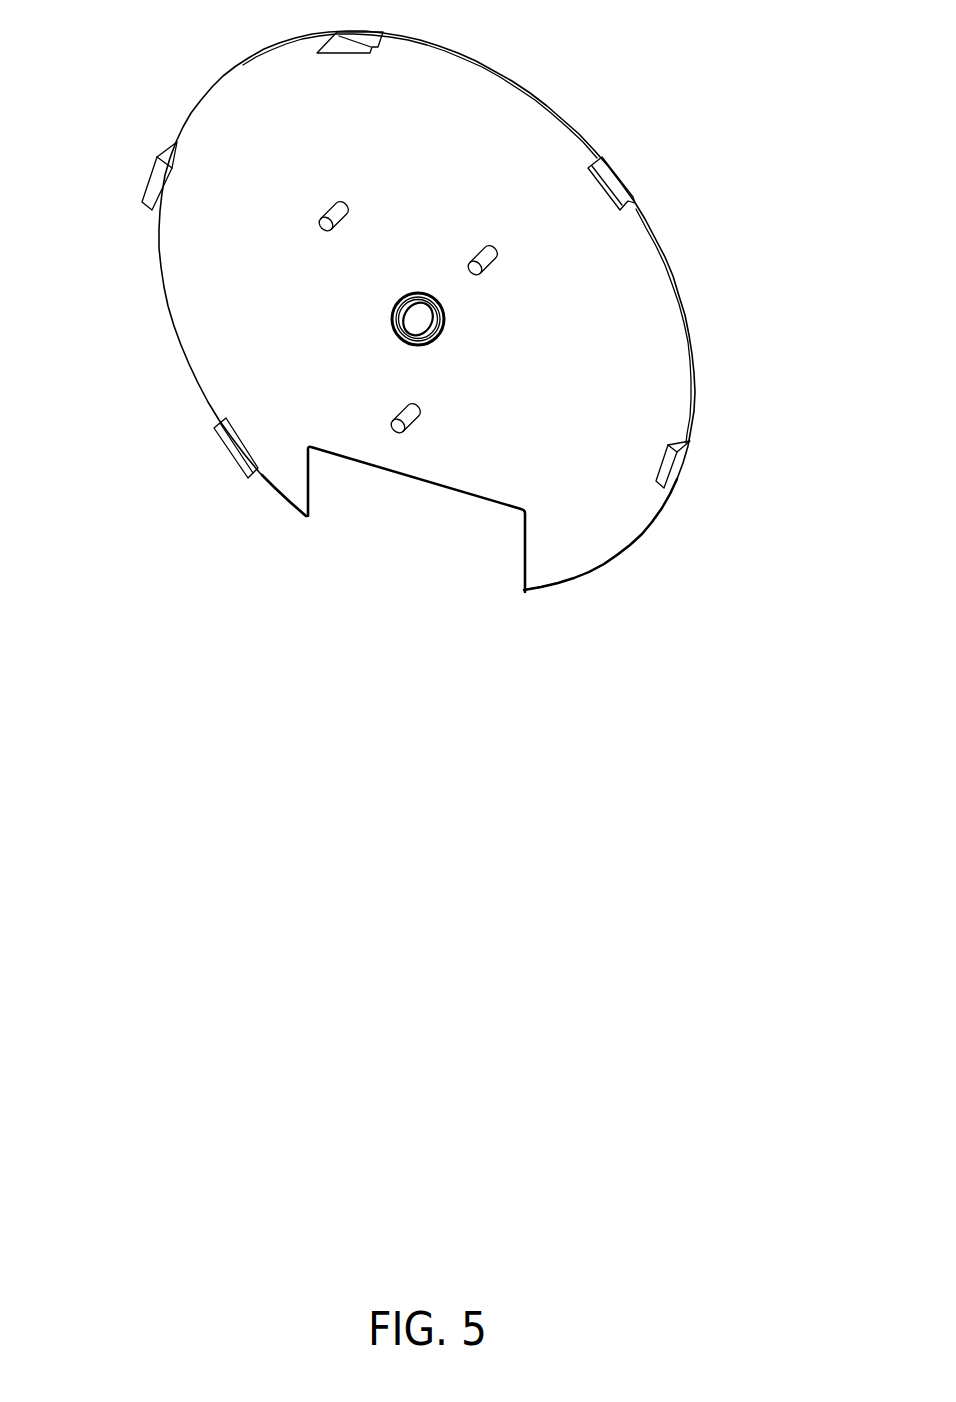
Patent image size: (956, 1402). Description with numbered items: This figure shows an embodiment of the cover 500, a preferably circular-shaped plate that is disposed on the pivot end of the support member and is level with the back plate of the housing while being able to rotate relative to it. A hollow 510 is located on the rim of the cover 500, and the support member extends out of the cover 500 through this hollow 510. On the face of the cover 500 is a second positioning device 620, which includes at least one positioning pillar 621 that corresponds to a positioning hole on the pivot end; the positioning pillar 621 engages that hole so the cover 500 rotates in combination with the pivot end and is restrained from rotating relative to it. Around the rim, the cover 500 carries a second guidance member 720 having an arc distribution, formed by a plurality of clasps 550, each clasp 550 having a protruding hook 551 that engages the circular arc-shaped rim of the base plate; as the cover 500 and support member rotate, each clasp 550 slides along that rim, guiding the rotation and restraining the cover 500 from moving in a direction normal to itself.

The cover 500 is at (647, 312).
The hollow 510 is at (415, 538).
The clasp 550 is at (680, 462).
The protruding hook 551 is at (157, 182).
The second guidance member 720 is at (612, 180).
The second positioning device 620 is at (333, 213).
The positioning pillar 621 is at (483, 245).